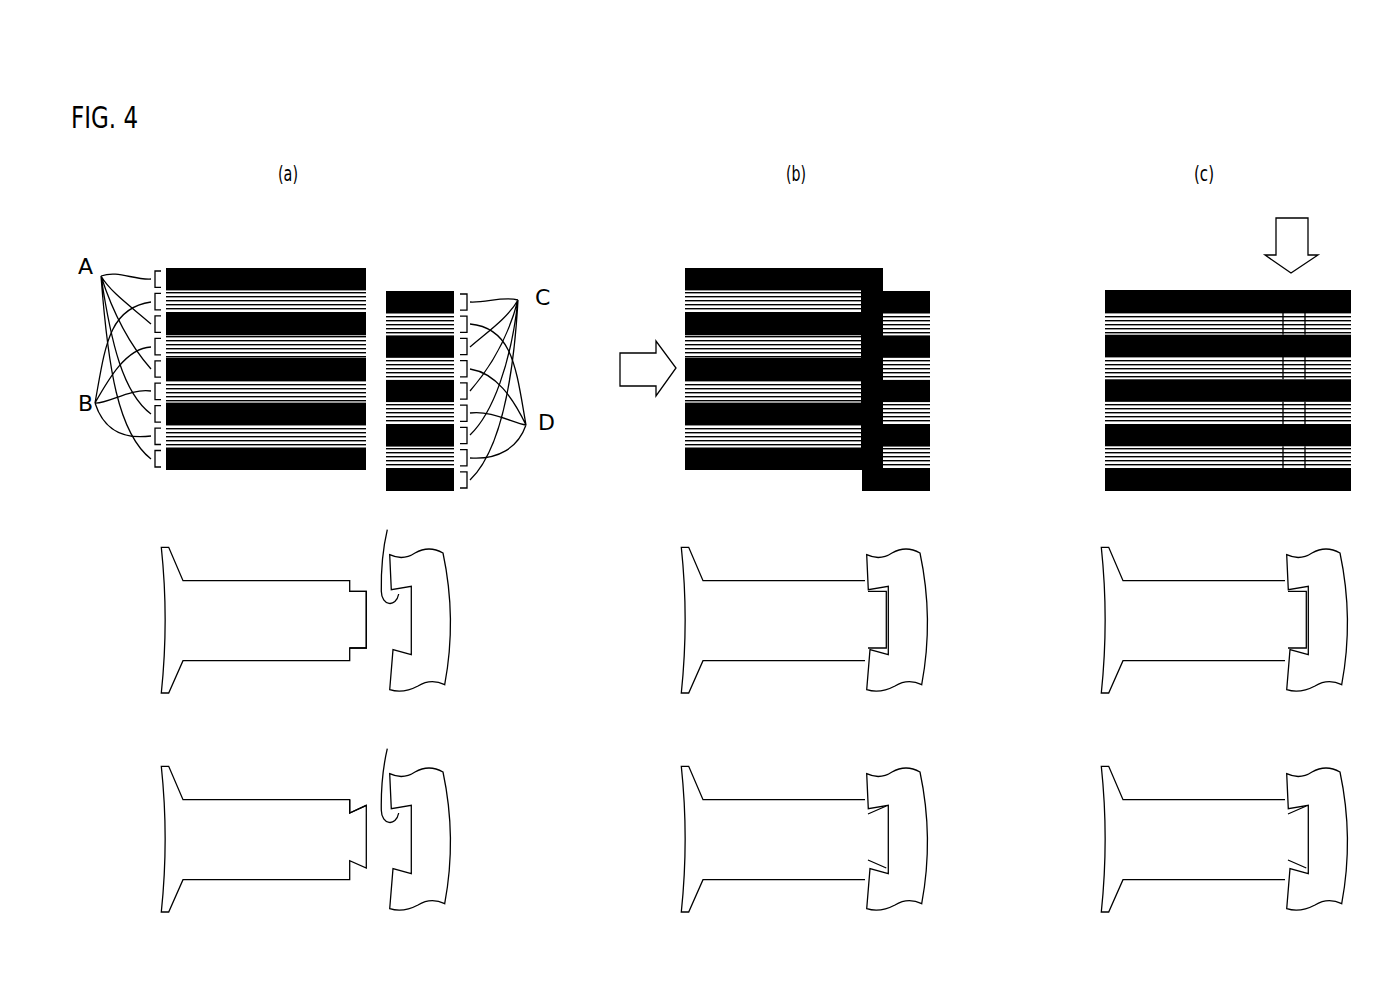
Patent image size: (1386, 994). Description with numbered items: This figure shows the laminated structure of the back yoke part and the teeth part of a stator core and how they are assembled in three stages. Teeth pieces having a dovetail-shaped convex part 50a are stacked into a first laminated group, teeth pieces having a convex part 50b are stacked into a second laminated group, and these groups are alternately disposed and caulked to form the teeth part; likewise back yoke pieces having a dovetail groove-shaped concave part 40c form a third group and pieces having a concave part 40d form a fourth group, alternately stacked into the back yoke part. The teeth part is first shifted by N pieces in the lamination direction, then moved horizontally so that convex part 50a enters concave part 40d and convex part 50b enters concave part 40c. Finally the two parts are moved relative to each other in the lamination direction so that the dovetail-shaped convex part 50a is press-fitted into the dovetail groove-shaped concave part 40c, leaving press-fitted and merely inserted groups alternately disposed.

The dovetail groove-shaped concave part 40c is at (385, 554).
The concave part 40d is at (386, 772).
The dovetail-shaped convex part 50a is at (352, 801).
The convex part 50b is at (352, 583).